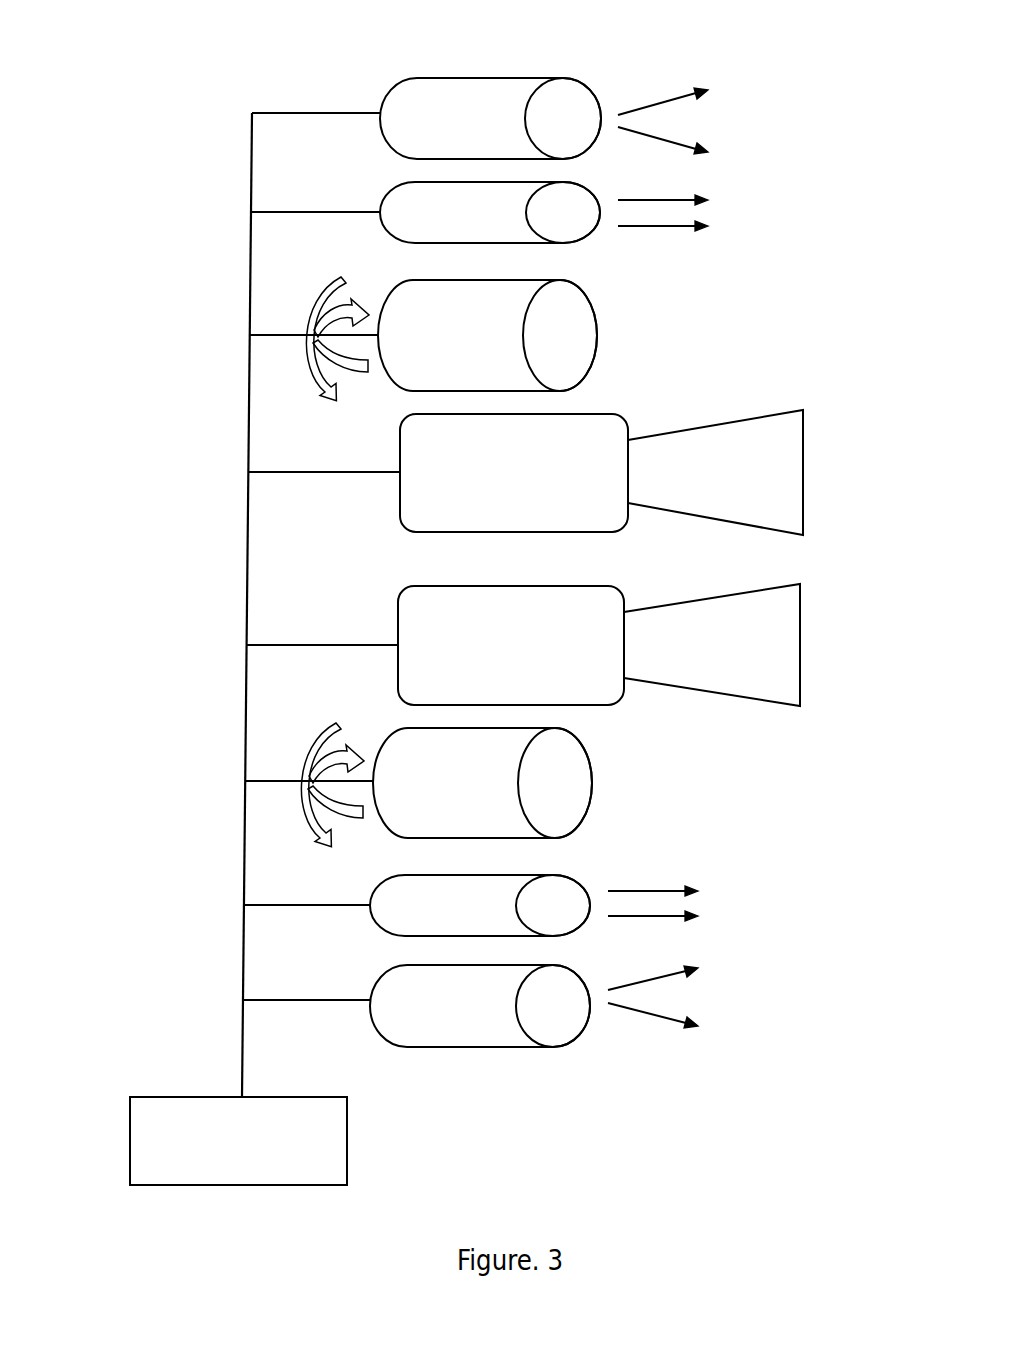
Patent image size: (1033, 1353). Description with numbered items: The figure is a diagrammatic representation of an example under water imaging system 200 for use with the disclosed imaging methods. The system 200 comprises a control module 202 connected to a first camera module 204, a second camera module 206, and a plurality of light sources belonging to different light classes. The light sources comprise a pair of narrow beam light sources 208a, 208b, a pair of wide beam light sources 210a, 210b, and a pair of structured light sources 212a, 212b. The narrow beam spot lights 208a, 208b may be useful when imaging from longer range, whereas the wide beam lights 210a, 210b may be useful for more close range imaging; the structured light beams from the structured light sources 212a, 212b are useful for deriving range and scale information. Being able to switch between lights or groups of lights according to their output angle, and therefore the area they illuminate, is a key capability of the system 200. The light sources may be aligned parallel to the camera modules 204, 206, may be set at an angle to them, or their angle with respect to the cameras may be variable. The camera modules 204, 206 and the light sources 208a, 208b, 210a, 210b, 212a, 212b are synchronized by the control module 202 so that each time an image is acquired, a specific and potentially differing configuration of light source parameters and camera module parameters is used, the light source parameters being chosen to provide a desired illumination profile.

The under water imaging system 200 is at (685, 1081).
The control module 202 is at (148, 1097).
The first camera module 204 is at (398, 625).
The second camera module 206 is at (400, 448).
The narrow beam light source 208a is at (590, 243).
The narrow beam light source 208b is at (580, 886).
The wide beam light source 210a is at (599, 84).
The wide beam light source 210b is at (455, 1047).
The structured light source 212a is at (592, 363).
The structured light source 212b is at (592, 765).